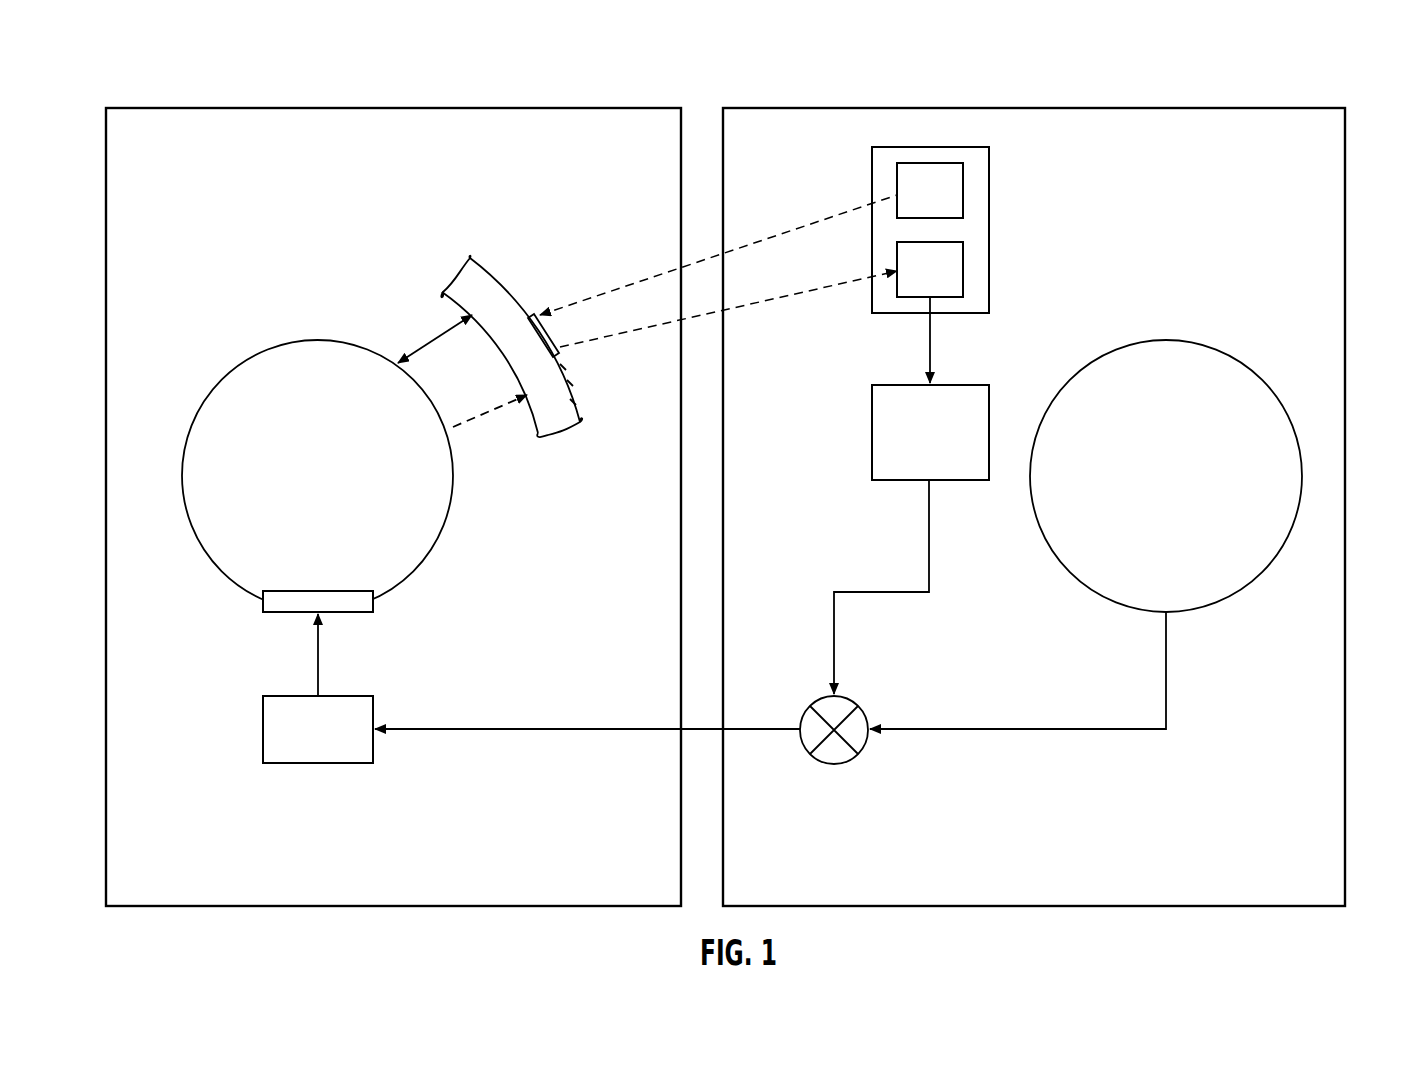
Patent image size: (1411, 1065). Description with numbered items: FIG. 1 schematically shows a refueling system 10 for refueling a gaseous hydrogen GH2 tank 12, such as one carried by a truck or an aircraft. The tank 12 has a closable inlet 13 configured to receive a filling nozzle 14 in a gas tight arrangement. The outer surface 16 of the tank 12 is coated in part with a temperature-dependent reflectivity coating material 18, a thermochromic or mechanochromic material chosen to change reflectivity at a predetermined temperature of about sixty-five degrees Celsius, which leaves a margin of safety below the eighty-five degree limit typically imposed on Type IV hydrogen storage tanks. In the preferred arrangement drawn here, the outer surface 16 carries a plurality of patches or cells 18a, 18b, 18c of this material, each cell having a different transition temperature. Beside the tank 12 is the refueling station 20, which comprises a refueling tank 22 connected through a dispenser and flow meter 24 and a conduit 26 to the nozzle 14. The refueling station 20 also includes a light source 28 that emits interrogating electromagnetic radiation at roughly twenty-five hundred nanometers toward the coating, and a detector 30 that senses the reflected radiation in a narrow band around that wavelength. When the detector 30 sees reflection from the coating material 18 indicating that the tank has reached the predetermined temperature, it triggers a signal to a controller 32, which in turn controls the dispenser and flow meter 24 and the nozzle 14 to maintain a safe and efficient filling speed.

The refueling system 10 is at (118, 97).
The refueling station 20 is at (1325, 98).
The GH2 tank 12 is at (236, 366).
The closable inlet 13 is at (263, 603).
The filling nozzle 14 is at (263, 731).
The outer surface 16 is at (488, 276).
The temperature-dependent reflectivity coating material 18 is at (547, 338).
The cell 18a is at (563, 367).
The cell 18b is at (570, 383).
The cell 18c is at (573, 402).
The refueling tank 22 is at (1250, 366).
The dispenser and flow meter 24 is at (833, 766).
The conduit 26 is at (1018, 731).
The light source 28 is at (963, 195).
The detector 30 is at (963, 264).
The controller 32 is at (905, 385).